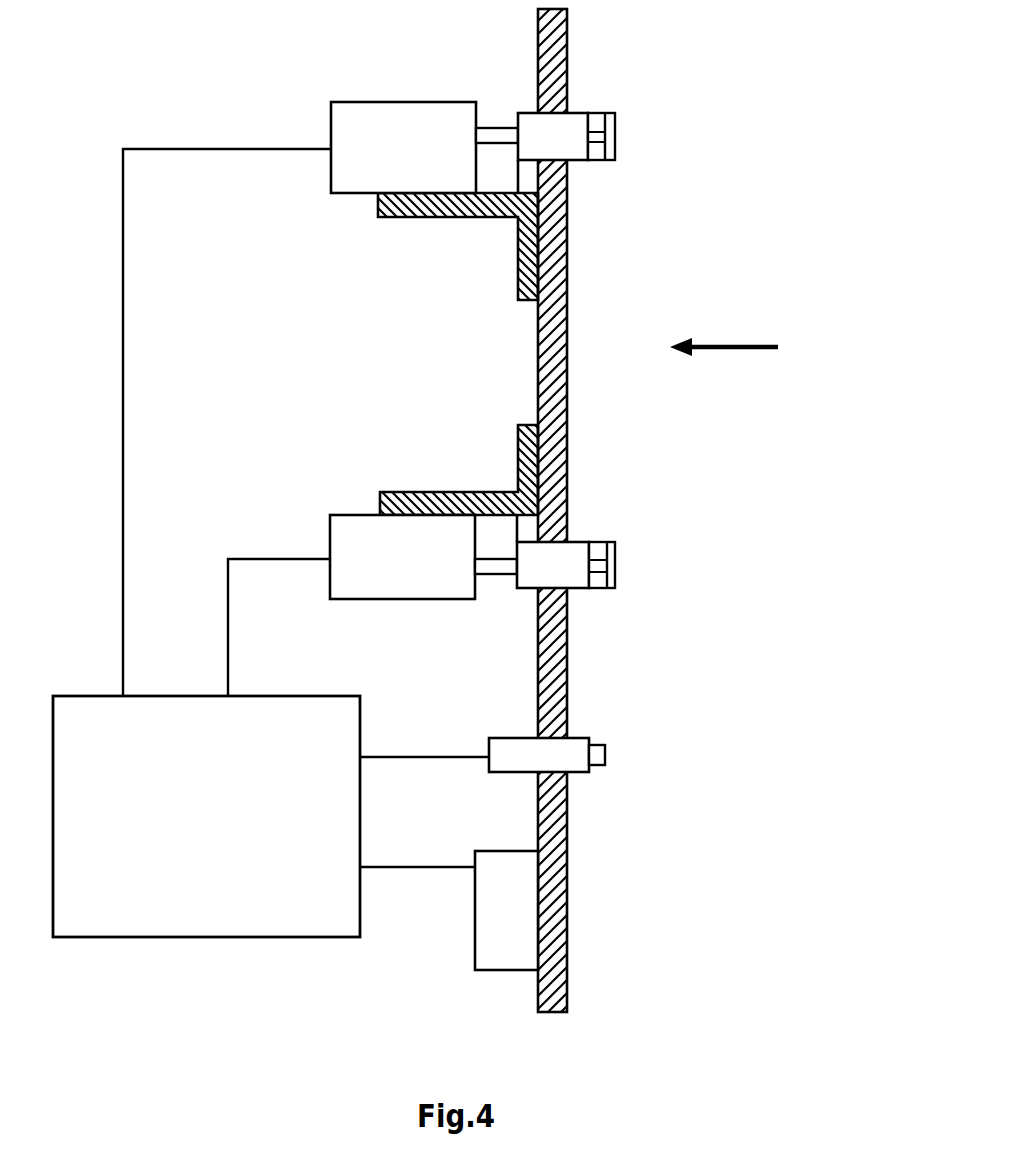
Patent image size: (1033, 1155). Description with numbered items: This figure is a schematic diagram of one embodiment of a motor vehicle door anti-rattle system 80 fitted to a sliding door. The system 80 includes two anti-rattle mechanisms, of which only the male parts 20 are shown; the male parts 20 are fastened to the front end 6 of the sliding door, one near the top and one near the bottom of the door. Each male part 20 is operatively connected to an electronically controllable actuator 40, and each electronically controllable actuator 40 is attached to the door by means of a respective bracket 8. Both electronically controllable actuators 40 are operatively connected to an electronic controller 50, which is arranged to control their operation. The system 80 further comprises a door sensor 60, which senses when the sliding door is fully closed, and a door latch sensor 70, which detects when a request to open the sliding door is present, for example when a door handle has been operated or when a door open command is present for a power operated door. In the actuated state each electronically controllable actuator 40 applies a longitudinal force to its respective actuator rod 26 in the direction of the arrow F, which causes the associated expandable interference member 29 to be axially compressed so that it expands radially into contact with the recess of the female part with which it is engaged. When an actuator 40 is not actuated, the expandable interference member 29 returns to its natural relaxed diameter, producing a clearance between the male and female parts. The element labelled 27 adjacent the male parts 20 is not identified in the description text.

The front end 6 is at (568, 27).
The bracket 8 is at (385, 220).
The male part 20 is at (622, 167).
The actuator rod 26 is at (502, 127).
The end cap 27 is at (615, 133).
The expandable interference member 29 is at (600, 113).
The electronically controllable actuator 40 is at (333, 92).
The electronic controller 50 is at (271, 543).
The door sensor 60 is at (614, 739).
The door latch sensor 70 is at (467, 941).
The motor vehicle door anti-rattle system 80 is at (745, 348).
The arrow F is at (440, 133).